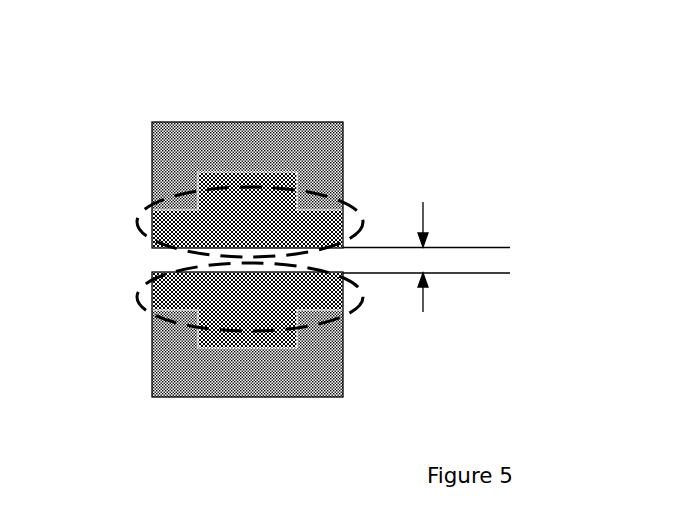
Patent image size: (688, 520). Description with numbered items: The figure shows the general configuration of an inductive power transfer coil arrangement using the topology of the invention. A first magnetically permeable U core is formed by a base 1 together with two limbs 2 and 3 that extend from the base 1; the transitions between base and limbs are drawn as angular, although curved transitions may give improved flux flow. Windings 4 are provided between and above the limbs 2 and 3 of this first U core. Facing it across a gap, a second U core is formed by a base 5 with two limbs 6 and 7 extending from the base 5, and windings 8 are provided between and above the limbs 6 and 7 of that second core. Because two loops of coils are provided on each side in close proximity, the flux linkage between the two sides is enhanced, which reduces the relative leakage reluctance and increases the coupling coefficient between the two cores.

The base 1 is at (211, 137).
The limb 2 is at (152, 190).
The limb 3 is at (343, 189).
The windings 4 is at (150, 228).
The base 5 is at (206, 370).
The limb 6 is at (152, 327).
The limb 7 is at (343, 332).
The windings 8 is at (152, 303).